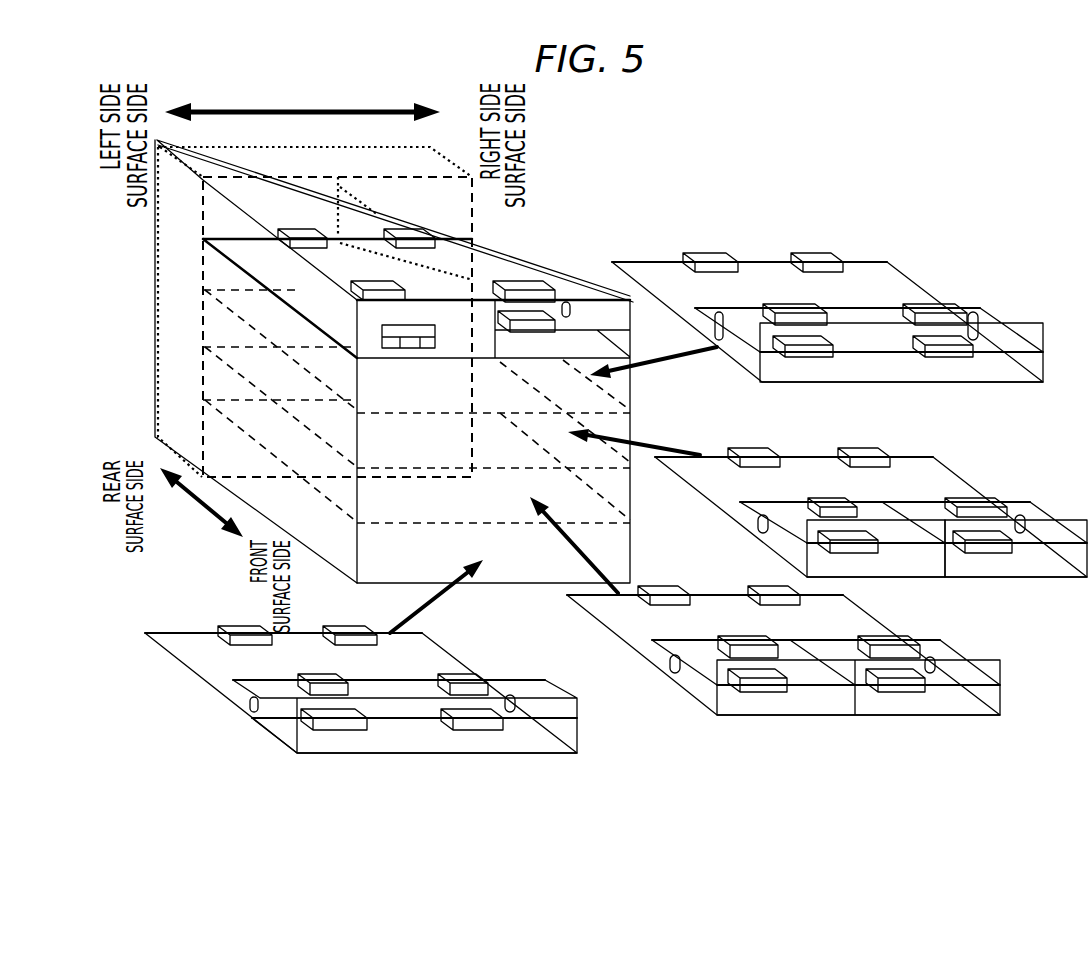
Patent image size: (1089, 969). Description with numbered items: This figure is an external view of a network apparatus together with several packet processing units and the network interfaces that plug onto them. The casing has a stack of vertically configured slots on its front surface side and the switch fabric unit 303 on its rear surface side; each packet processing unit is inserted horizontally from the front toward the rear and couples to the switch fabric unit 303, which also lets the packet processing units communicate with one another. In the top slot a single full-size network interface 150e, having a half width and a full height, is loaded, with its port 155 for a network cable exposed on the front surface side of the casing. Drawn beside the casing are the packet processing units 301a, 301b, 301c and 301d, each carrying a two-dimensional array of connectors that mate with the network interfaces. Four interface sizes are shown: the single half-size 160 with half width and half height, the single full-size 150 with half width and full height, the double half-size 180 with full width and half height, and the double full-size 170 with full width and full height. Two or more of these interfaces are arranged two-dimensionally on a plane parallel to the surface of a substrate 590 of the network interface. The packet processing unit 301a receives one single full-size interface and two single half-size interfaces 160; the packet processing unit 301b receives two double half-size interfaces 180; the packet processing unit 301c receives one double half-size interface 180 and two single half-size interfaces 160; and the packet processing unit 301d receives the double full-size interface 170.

The switch fabric unit 303 is at (190, 305).
The single full-size network interface 150e is at (353, 366).
The port 155 is at (405, 348).
The packet processing unit 301a is at (770, 263).
The packet processing unit 301b is at (792, 467).
The packet processing unit 301c is at (617, 612).
The packet processing unit 301d is at (207, 658).
The double half-size network interface 180 is at (1003, 323).
The single full-size network interface 150 is at (913, 558).
The single half-size network interface 160 is at (1067, 530).
The substrate 590 is at (703, 667).
The double full-size network interface 170 is at (525, 735).